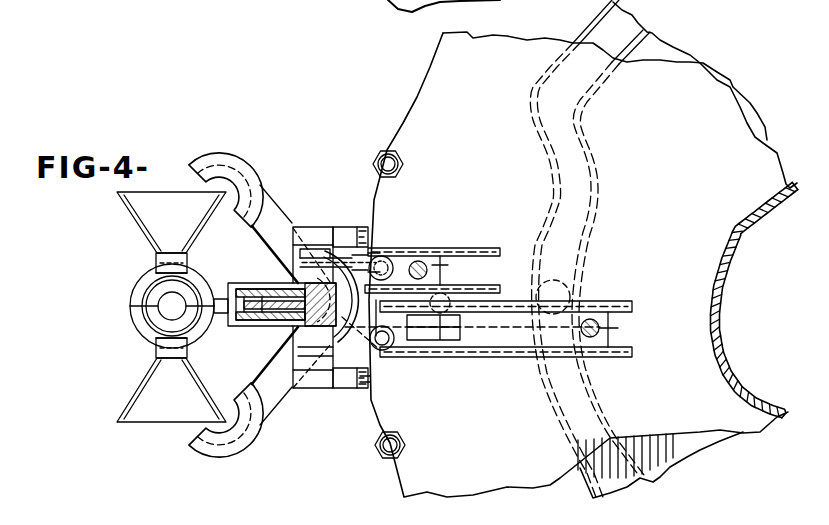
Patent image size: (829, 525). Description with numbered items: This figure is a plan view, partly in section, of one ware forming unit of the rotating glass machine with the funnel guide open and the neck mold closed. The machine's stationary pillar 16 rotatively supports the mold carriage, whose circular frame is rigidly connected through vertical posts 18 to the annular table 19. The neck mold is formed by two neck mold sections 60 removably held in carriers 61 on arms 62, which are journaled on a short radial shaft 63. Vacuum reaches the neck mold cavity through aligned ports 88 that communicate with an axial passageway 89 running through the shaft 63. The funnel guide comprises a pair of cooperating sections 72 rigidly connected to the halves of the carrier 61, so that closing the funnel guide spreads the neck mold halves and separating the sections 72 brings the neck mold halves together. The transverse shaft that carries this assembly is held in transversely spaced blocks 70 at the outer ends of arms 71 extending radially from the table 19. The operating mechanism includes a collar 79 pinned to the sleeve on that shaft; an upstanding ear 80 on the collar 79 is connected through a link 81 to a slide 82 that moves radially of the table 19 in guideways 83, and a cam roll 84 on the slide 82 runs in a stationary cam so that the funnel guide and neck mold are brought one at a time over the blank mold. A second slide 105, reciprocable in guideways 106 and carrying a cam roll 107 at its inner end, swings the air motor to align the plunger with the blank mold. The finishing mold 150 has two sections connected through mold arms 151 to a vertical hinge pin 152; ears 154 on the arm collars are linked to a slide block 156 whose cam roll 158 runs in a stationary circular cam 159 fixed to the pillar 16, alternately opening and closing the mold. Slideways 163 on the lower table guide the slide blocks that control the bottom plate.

The pillar 16 is at (729, 262).
The vertical posts 18 is at (399, 164).
The annular table 19 is at (405, 476).
The neck mold sections 60 is at (160, 287).
The carriers 61 is at (138, 296).
The arms 62 is at (224, 284).
The radial shaft 63 is at (214, 330).
The blocks 70 is at (326, 214).
The arms 71 is at (346, 228).
The funnel guide sections 72 is at (140, 208).
The collar 79 is at (300, 274).
The upstanding ear 80 is at (298, 249).
The link 81 is at (308, 242).
The slide 82 is at (418, 260).
The guideways 83 is at (473, 249).
The cam roll 84 is at (446, 270).
The ports 88 is at (243, 290).
The axial passageway 89 is at (255, 329).
The slide 105 is at (506, 353).
The guideways 106 is at (484, 360).
The cam roll 107 is at (612, 328).
The finishing mold 150 is at (237, 166).
The mold arms 151 is at (262, 192).
The vertical hinge pin 152 is at (372, 340).
The ears 154 is at (374, 380).
The slide block 156 is at (575, 252).
The cam roll 158 is at (570, 282).
The stationary circular cam 159 is at (580, 210).
The slideways 163 is at (430, 344).